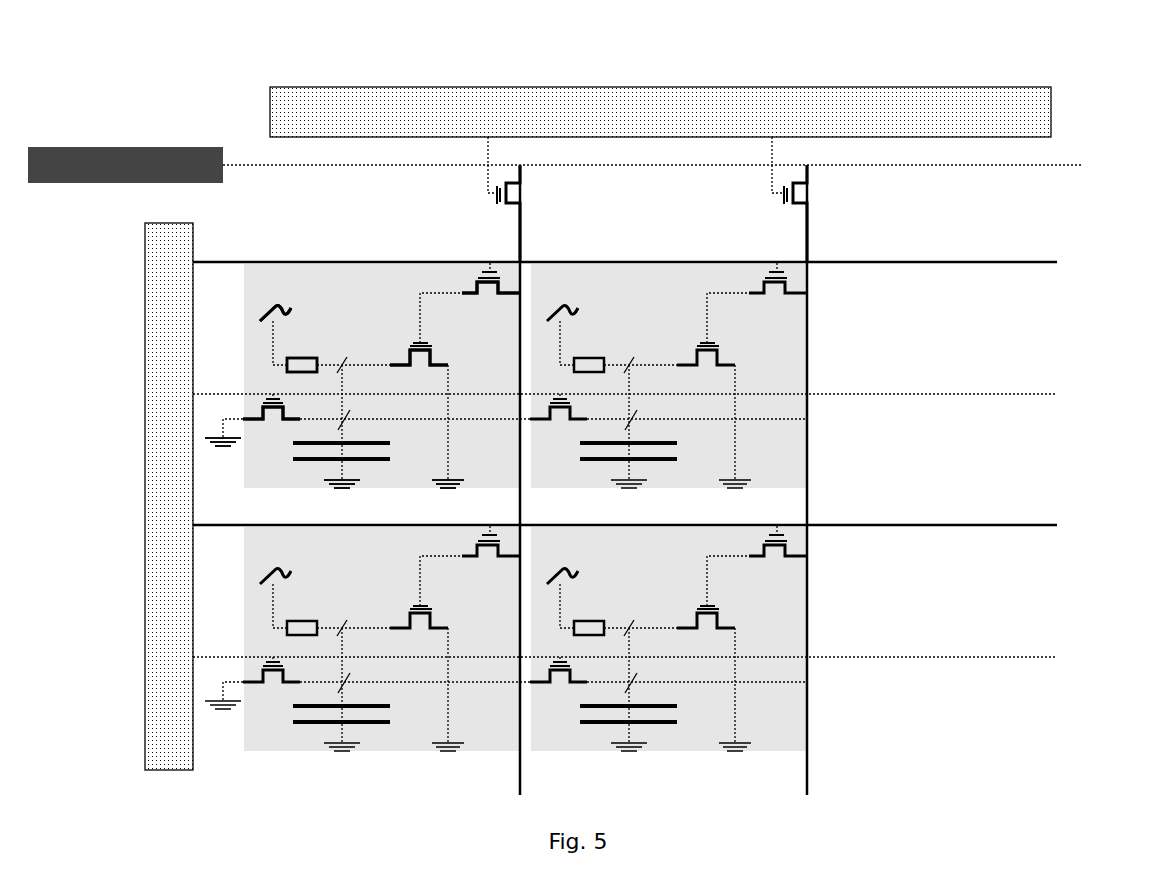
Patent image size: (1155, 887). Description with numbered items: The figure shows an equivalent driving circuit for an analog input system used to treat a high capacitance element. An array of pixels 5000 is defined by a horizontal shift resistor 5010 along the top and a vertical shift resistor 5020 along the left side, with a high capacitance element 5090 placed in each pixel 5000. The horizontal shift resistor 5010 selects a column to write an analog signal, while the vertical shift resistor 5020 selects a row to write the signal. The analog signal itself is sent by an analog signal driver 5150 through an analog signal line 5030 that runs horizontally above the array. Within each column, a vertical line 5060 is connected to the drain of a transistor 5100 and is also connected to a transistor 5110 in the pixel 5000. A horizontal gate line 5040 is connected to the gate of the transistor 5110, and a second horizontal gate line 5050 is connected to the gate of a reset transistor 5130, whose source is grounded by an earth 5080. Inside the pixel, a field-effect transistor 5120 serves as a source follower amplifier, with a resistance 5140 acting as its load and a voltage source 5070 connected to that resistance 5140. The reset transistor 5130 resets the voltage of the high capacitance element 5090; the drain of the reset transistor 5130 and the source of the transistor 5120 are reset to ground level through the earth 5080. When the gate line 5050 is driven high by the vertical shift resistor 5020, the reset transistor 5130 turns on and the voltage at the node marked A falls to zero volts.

The pixel 5000 is at (500, 505).
The horizontal shift resistor 5010 is at (1051, 87).
The vertical shift resistor 5020 is at (145, 295).
The analog signal line 5030 is at (1000, 165).
The horizontal gate line 5040 is at (1040, 262).
The horizontal gate line 5050 is at (1030, 393).
The vertical line 5060 is at (522, 250).
The voltage source 5070 is at (272, 309).
The earth 5080 is at (219, 460).
The high capacitance element 5090 is at (390, 460).
The transistor 5100 is at (523, 192).
The transistor 5110 is at (470, 279).
The transistor 5120 is at (422, 340).
The reset transistor 5130 is at (278, 422).
The resistance 5140 is at (305, 354).
The analog signal driver 5150 is at (213, 147).